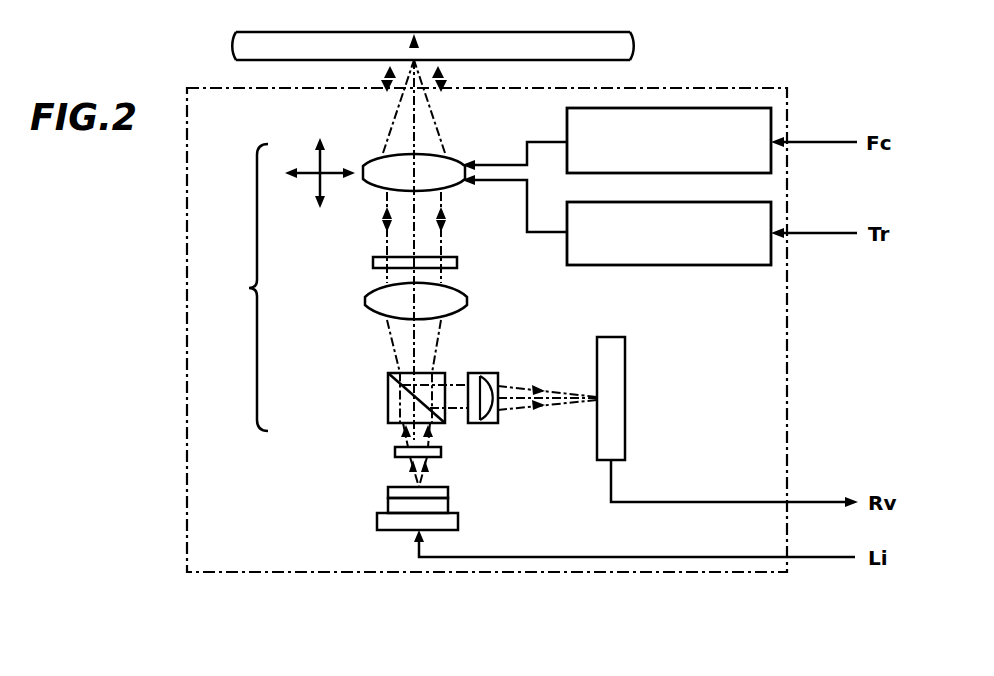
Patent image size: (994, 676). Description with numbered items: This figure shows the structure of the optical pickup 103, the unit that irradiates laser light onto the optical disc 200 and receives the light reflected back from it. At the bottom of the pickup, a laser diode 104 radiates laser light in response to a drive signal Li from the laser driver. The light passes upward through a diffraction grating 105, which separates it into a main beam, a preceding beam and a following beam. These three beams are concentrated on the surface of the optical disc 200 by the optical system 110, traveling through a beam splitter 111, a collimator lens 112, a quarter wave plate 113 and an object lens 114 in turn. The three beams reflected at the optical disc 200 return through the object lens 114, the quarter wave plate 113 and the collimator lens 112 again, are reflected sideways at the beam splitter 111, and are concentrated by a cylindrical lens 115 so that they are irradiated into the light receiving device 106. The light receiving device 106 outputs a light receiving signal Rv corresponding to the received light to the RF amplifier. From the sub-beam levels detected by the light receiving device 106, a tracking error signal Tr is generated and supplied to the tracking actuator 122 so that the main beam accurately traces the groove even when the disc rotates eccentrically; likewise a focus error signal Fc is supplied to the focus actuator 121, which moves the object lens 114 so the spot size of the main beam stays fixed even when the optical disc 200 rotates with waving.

The optical disc 200 is at (630, 32).
The optical pickup 103 is at (232, 88).
The optical system 110 is at (236, 287).
The object lens 114 is at (452, 181).
The ¼ wave plate 113 is at (373, 262).
The collimator lens 112 is at (365, 299).
The beam splitter 111 is at (388, 400).
The cylindrical lens 115 is at (470, 373).
The diffraction grating 105 is at (395, 452).
The laser diode 104 is at (388, 495).
The light receiving device 106 is at (607, 337).
The focus actuator 121 is at (730, 108).
The tracking actuator 122 is at (705, 265).